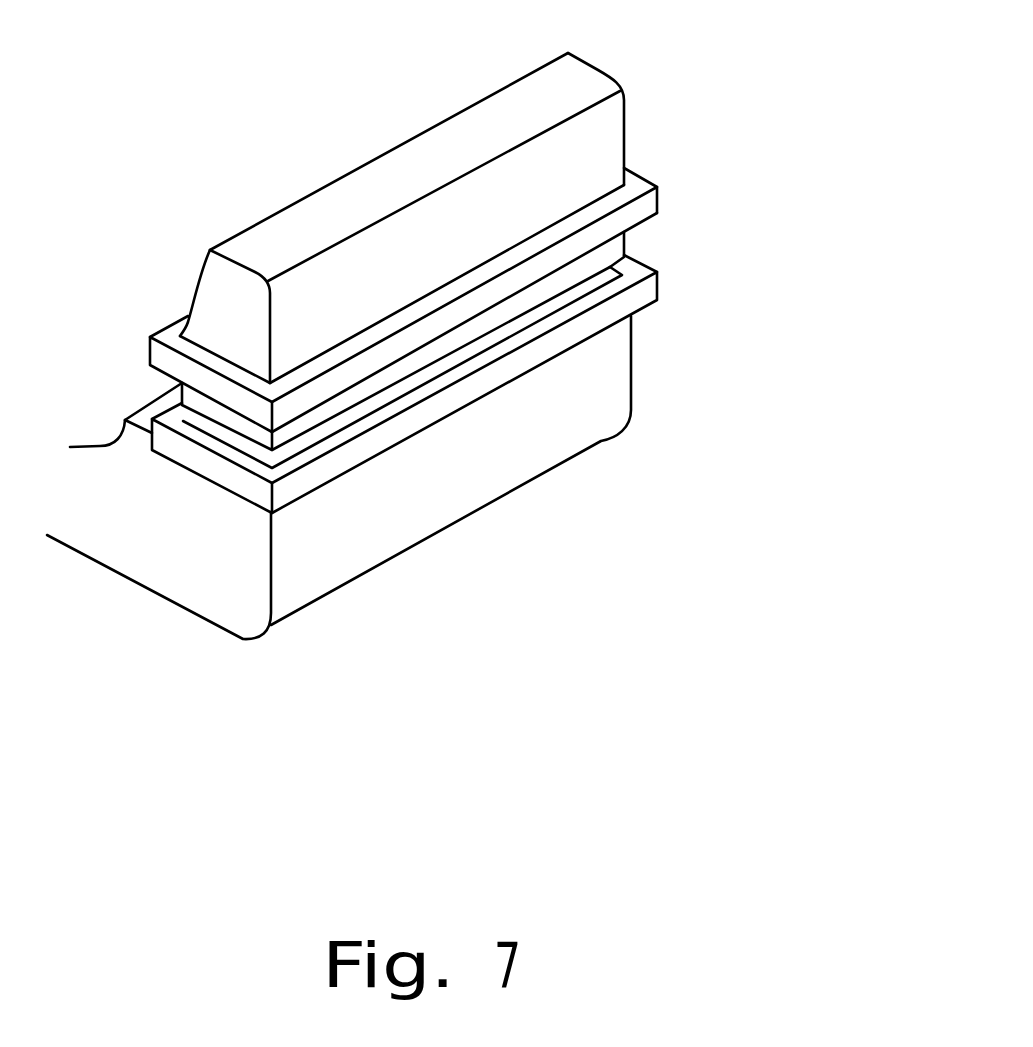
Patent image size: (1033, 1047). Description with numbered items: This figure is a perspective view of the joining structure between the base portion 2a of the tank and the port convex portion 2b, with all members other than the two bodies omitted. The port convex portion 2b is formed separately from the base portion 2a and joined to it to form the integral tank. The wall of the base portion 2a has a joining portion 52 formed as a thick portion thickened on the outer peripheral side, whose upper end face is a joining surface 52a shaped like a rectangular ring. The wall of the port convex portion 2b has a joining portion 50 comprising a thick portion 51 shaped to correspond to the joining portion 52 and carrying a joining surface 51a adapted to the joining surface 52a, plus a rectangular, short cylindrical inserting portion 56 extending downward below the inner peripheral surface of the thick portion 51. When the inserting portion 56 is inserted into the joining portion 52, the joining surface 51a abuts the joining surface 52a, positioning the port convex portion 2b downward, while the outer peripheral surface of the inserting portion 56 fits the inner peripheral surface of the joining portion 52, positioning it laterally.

The base portion 2a is at (632, 374).
The port convex portion 2b is at (627, 127).
The joining portion 50 is at (509, 277).
The thick portion 51 is at (509, 289).
The joining surface 51a is at (640, 217).
The joining portion 52 is at (486, 384).
The joining surface 52a is at (563, 315).
The inserting portion 56 is at (613, 242).